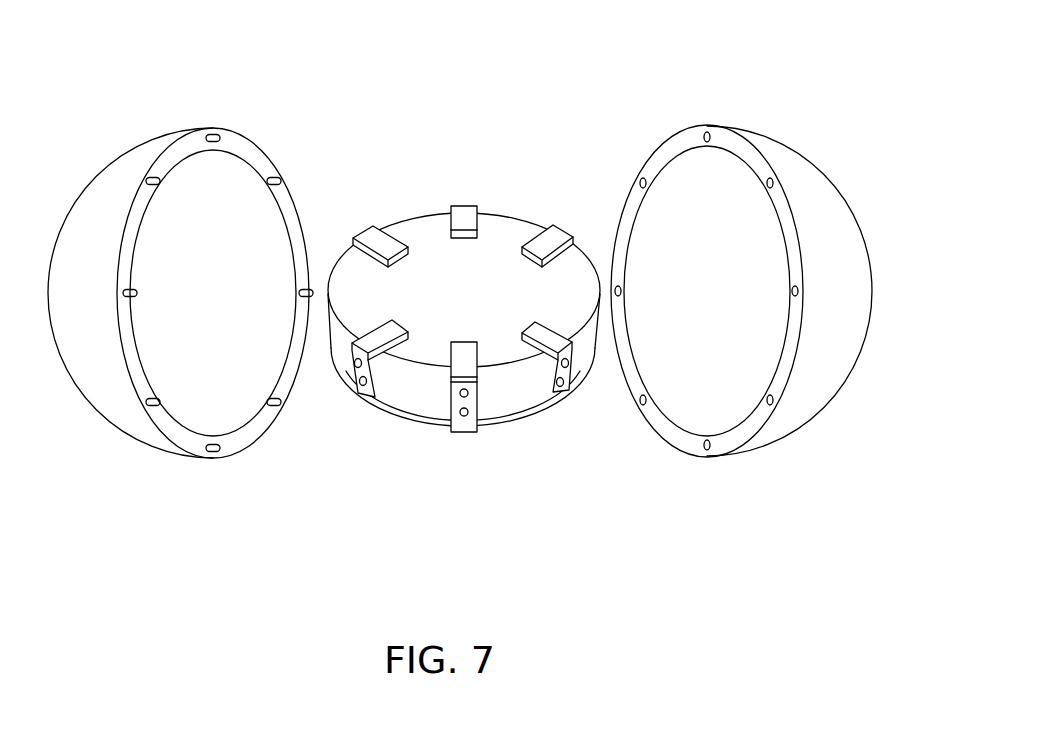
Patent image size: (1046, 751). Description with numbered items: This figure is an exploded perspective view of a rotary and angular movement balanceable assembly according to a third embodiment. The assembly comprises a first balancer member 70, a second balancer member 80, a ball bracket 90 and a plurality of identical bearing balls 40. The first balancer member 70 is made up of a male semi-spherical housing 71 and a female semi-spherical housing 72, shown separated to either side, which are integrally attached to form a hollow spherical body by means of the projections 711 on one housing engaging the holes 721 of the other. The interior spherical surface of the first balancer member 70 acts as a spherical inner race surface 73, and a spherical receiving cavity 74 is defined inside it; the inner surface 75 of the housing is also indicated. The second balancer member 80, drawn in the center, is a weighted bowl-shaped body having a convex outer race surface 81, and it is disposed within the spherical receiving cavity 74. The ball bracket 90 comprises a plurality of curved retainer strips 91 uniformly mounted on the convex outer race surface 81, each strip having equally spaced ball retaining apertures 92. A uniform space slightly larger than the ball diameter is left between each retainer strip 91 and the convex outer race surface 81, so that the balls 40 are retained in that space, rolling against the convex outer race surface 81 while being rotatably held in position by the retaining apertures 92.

The first balancer member 70 is at (768, 118).
The male semi-spherical housing 71 is at (370, 282).
The female semi-spherical housing 72 is at (492, 280).
The spherical inner race surface 73 is at (404, 282).
The projections 711 is at (306, 291).
The holes 721 is at (705, 35).
The spherical receiving cavity 74 is at (707, 263).
The inner surface 75 is at (258, 340).
The second balancer member 80 is at (499, 311).
The convex outer race surface 81 is at (510, 395).
The ball bracket 90 is at (563, 217).
The curved retainer strips 91 is at (511, 412).
The ball retaining apertures 92 is at (474, 402).
The bearing balls 40 is at (358, 368).